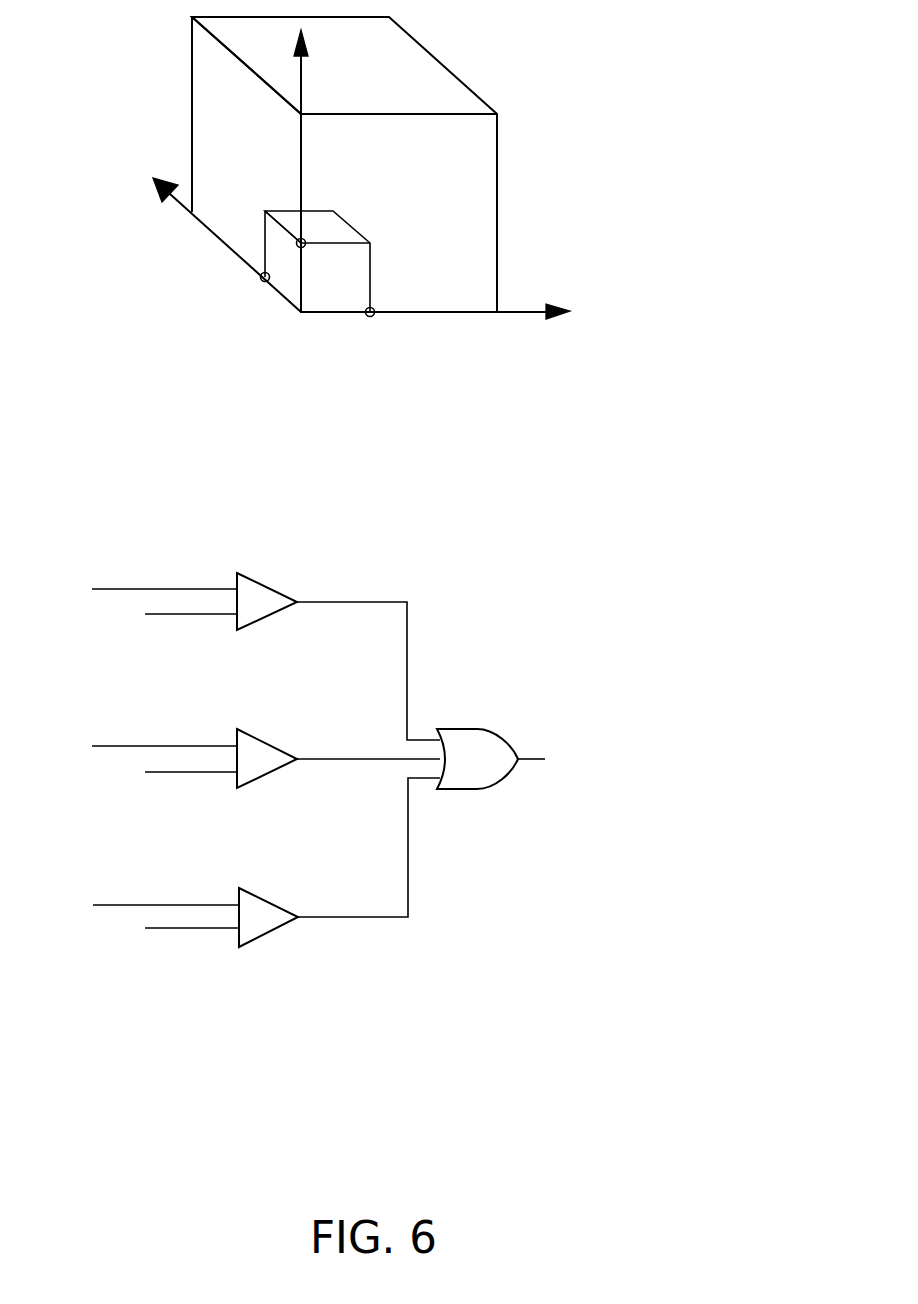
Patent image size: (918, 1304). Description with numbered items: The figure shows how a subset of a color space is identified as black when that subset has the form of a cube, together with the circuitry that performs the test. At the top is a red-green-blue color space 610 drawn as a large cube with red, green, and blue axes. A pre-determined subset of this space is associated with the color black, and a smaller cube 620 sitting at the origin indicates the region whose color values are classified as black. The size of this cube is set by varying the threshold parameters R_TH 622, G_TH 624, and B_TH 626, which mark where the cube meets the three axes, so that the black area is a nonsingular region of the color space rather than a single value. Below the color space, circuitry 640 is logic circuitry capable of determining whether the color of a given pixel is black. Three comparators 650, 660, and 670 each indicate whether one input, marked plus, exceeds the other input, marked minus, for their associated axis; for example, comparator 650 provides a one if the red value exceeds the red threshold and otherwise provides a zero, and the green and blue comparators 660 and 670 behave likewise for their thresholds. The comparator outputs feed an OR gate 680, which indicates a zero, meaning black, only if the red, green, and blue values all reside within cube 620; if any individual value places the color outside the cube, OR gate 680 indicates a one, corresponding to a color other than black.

The red-green-blue (RGB) color space 610 is at (474, 92).
The cube 620 is at (371, 257).
The R_TH parameter 622 is at (262, 280).
The G_TH parameter 624 is at (305, 240).
The B_TH parameter 626 is at (374, 315).
The circuitry 640 is at (135, 523).
The comparator 650 is at (263, 621).
The comparator 660 is at (263, 779).
The comparator 670 is at (264, 937).
The OR gate 680 is at (478, 790).